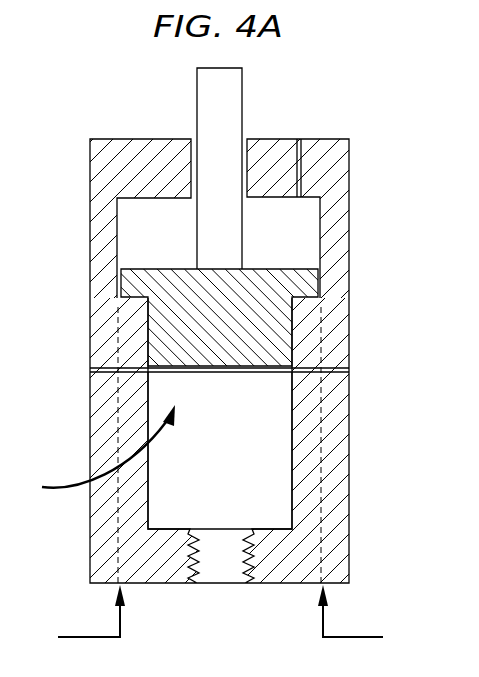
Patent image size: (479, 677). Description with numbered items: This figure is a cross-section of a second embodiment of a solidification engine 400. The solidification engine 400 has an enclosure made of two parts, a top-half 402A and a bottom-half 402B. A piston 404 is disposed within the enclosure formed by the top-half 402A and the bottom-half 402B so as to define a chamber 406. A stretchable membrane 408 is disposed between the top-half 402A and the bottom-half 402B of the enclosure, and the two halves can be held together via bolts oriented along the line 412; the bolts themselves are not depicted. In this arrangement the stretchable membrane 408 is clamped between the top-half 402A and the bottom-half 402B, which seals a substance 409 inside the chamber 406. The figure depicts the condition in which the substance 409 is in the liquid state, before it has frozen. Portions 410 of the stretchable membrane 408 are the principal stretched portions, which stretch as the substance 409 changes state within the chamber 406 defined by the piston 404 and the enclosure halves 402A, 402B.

The solidification engine 400 is at (386, 103).
The top-half of the enclosure 402A is at (349, 178).
The bottom-half of the enclosure 402B is at (349, 458).
The piston 404 is at (173, 327).
The chamber 406 is at (91, 450).
The stretchable membrane 408 is at (320, 361).
The substance 409 is at (173, 509).
The portions of the stretchable membrane 410 is at (338, 168).
The line 412 is at (221, 615).